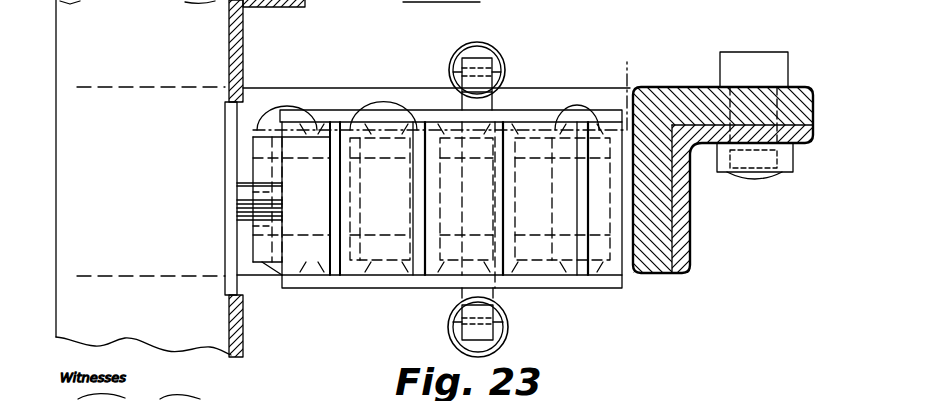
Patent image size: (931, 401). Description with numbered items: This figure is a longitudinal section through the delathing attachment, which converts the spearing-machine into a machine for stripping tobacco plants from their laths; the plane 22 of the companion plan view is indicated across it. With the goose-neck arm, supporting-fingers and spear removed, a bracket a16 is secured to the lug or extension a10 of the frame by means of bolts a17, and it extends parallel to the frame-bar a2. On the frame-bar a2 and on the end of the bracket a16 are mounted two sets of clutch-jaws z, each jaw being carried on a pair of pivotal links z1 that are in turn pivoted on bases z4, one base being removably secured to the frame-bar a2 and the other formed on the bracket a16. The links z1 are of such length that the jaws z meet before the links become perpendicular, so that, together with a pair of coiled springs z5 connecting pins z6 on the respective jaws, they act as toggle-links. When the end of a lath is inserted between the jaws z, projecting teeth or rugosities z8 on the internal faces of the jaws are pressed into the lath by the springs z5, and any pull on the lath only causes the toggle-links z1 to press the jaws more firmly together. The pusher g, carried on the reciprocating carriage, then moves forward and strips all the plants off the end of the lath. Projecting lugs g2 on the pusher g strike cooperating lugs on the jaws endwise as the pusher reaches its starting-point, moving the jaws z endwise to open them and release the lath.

The pusher g is at (243, 71).
The projecting lugs g2 is at (240, 193).
The clutch-jaws z is at (318, 288).
The pivotal links z1 is at (253, 148).
The bases z4 is at (258, 223).
The coiled springs z5 is at (503, 66).
The pins z6 is at (494, 295).
The projecting teeth or rugosities z8 is at (402, 215).
The frame-bar a2 is at (348, 93).
The bracket a16 is at (686, 92).
The bolts a17 is at (770, 178).
The lug or extension a10 is at (690, 221).
The section plane 22 is at (437, 91).